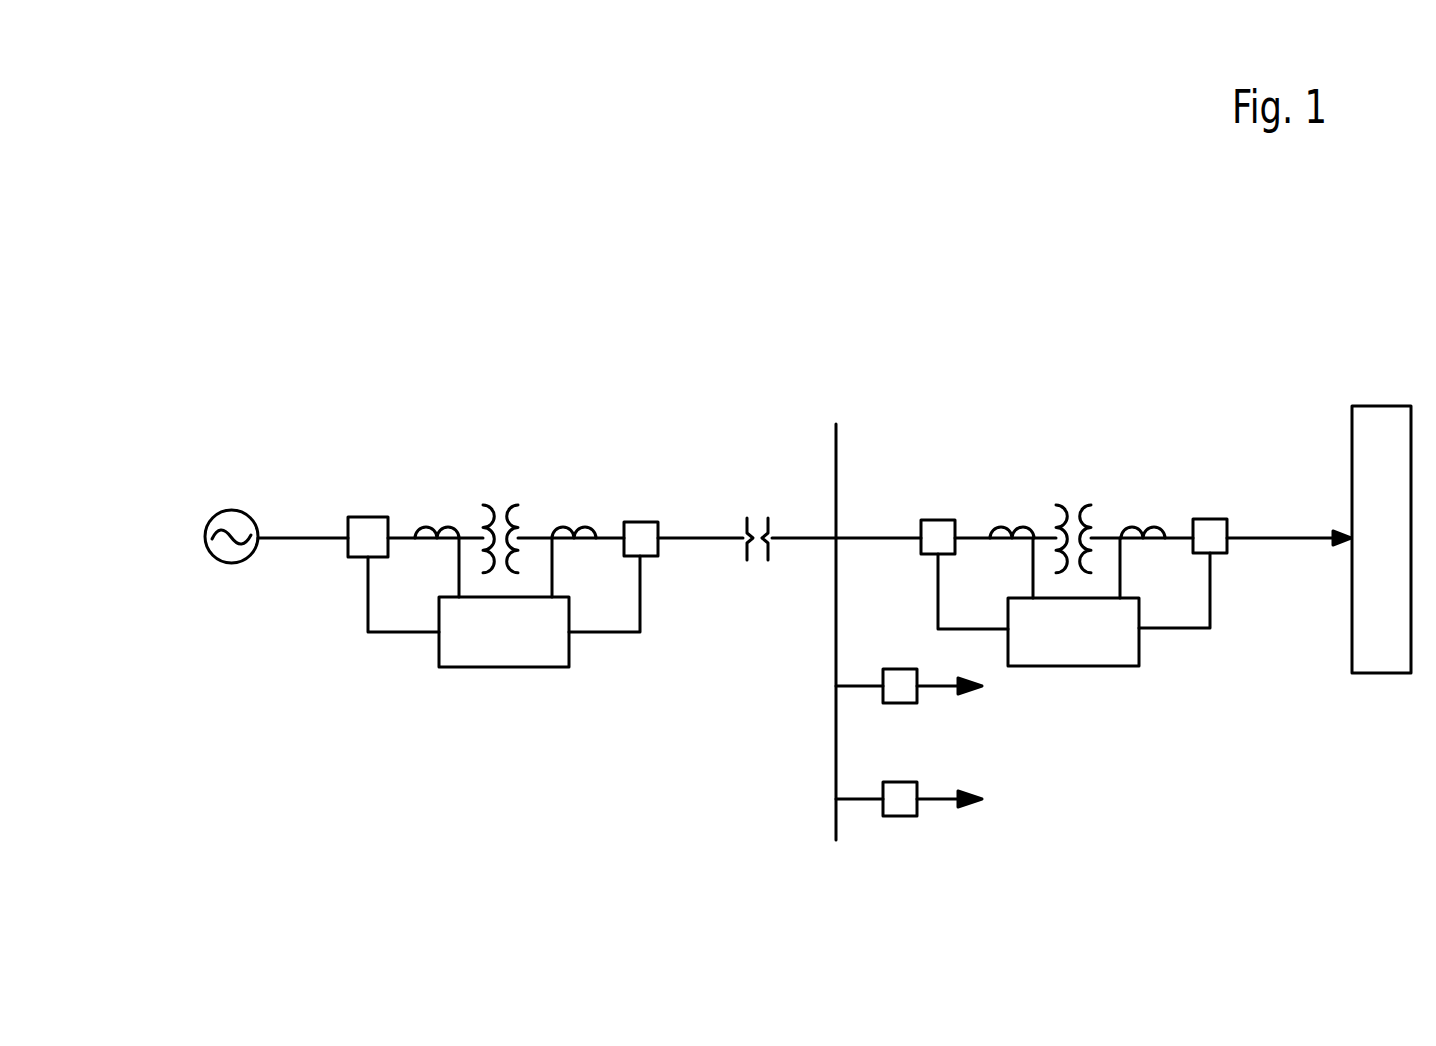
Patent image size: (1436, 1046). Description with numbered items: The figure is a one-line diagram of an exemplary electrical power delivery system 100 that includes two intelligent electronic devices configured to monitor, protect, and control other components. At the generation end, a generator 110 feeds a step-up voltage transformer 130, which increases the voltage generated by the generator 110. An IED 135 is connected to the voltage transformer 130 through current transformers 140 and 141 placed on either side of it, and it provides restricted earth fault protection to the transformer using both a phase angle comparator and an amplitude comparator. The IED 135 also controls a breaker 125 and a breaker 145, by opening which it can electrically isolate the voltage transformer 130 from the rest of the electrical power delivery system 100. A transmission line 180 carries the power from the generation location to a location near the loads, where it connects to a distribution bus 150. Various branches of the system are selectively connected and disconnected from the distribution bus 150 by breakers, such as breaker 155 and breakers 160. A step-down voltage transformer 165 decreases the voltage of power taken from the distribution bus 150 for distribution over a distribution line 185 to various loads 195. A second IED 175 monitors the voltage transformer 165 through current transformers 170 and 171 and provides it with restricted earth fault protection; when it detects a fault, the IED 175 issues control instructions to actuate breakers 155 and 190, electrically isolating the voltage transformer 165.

The electrical power delivery system 100 is at (380, 293).
The generator 110 is at (232, 509).
The breaker 125 is at (368, 515).
The step-up voltage transformer 130 is at (501, 500).
The intelligent electronic device (IED) 135 is at (508, 667).
The current transformer 140 is at (450, 530).
The current transformer 141 is at (563, 524).
The breaker 145 is at (631, 520).
The distribution bus 150 is at (836, 482).
The breaker 155 is at (947, 518).
The breakers 160 is at (908, 703).
The step-down voltage transformer 165 is at (1072, 501).
The current transformer 170 is at (1028, 529).
The current transformer 171 is at (1132, 529).
The intelligent electronic device (IED) 175 is at (1071, 667).
The transmission line 180 is at (693, 536).
The distribution line 185 is at (1305, 541).
The breaker 190 is at (1210, 517).
The loads 195 is at (1383, 405).